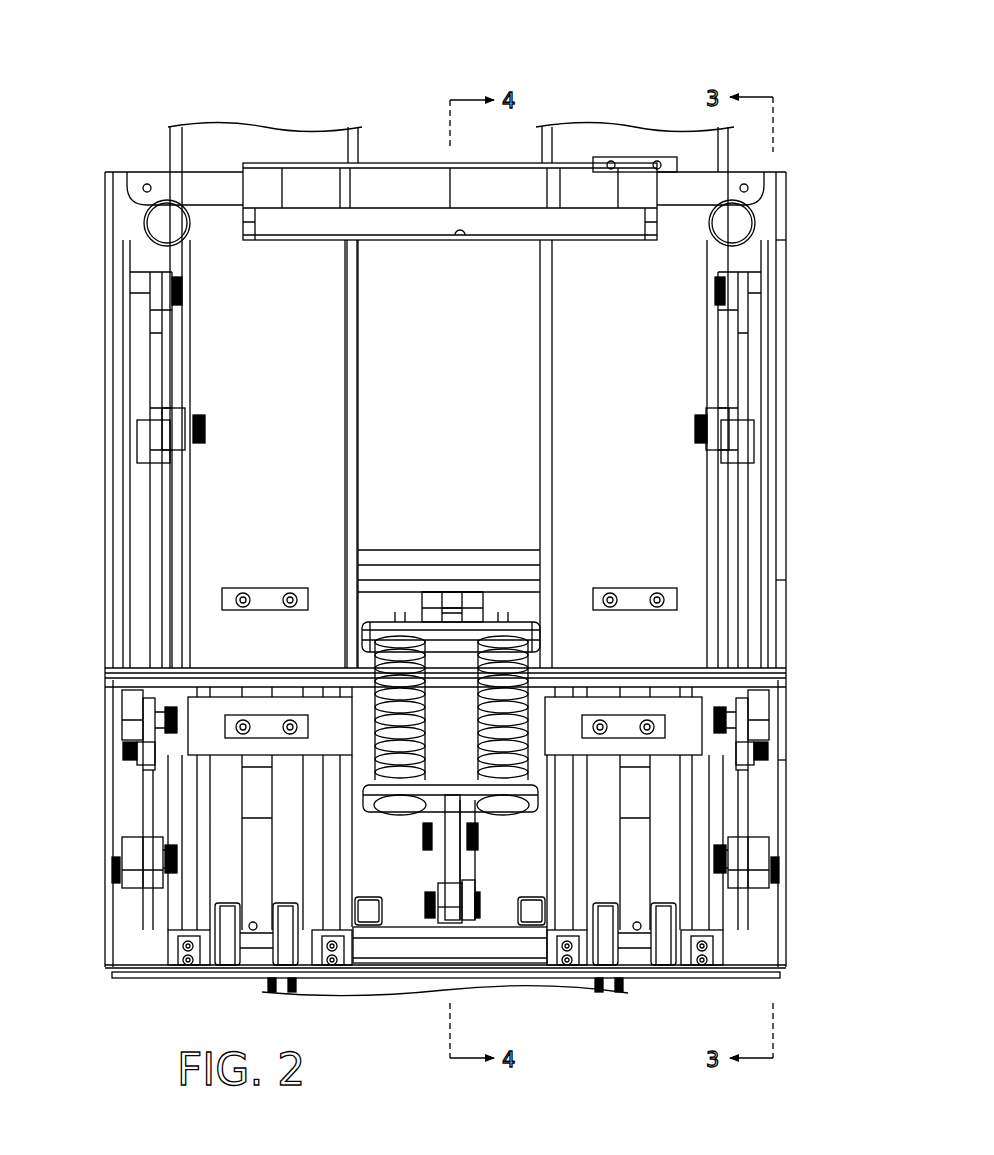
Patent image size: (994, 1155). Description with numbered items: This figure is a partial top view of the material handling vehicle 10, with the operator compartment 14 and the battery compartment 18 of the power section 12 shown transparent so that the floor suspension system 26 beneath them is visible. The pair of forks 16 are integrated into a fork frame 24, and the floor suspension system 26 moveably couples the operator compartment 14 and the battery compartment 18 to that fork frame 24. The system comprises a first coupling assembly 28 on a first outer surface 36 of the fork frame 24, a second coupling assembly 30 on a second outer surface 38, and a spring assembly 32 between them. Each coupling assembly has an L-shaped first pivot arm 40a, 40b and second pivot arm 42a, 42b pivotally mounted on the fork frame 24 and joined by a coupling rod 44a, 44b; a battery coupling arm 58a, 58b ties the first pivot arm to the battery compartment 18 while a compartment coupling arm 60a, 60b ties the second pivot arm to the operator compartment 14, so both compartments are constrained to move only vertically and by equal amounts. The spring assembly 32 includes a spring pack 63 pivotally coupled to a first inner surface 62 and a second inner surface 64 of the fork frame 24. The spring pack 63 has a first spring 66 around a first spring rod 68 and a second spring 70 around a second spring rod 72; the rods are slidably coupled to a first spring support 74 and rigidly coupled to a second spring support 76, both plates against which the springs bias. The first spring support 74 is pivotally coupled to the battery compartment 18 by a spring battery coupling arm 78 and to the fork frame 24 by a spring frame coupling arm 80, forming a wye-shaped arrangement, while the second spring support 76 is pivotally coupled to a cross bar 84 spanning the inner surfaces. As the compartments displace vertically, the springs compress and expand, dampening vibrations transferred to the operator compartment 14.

The material handling vehicle 10 is at (106, 82).
The power section 12 is at (80, 912).
The operator compartment 14 is at (800, 540).
The forks 16 is at (283, 133).
The battery compartment 18 is at (796, 792).
The fork frame 24 is at (791, 160).
The floor suspension system 26 is at (792, 322).
The first coupling assembly 28 is at (782, 352).
The second coupling assembly 30 is at (108, 337).
The spring assembly 32 is at (432, 530).
The first outer surface 36 is at (732, 260).
The second outer surface 38 is at (168, 262).
The first pivot arm 40a is at (744, 800).
The first pivot arm 40b is at (143, 802).
The second pivot arm 42a is at (748, 378).
The second pivot arm 42b is at (150, 384).
The coupling rod 44a is at (760, 574).
The coupling rod 44b is at (135, 556).
The battery coupling arm 58a is at (760, 866).
The battery coupling arm 58b is at (135, 860).
The compartment coupling arm 60a is at (733, 433).
The compartment coupling arm 60b is at (165, 430).
The first inner surface 62 is at (546, 446).
The spring pack 63 is at (496, 607).
The second inner surface 64 is at (358, 470).
The first spring 66 is at (515, 656).
The first spring rod 68 is at (492, 810).
The second spring 70 is at (378, 655).
The second spring rod 72 is at (400, 812).
The first spring support 74 is at (445, 787).
The second spring support 76 is at (413, 628).
The spring battery coupling arm 78 is at (438, 852).
The spring frame coupling arm 80 is at (467, 872).
The cross bar 84 is at (455, 590).